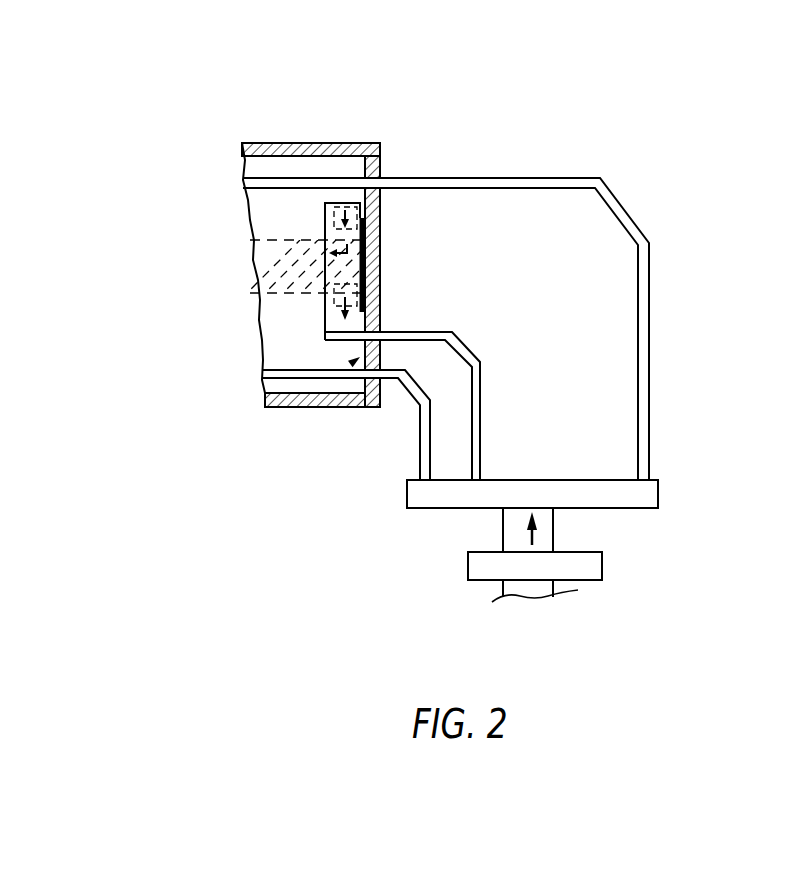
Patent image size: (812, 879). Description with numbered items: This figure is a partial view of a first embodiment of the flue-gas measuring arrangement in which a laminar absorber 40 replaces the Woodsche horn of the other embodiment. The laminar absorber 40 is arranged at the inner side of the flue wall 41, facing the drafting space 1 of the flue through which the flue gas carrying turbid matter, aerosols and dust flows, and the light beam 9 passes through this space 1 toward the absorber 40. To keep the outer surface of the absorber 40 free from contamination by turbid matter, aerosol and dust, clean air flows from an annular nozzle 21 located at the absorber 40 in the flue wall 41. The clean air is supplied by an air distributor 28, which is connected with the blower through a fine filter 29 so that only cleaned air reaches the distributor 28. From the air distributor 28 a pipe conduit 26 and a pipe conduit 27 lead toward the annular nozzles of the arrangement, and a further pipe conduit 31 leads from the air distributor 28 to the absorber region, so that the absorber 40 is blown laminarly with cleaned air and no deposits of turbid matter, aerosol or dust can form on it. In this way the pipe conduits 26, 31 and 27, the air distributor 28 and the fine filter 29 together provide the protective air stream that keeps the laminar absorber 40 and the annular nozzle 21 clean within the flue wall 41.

The drafting space 1 is at (302, 344).
The light beam 9 is at (280, 258).
The annular nozzle 21 is at (328, 218).
The laminar absorber 40 is at (360, 242).
The flue wall 41 is at (360, 357).
The pipe conduit 26 is at (623, 215).
The further pipe conduit 31 is at (465, 348).
The pipe conduit 27 is at (412, 392).
The air distributor 28 is at (643, 495).
The fine filter 29 is at (577, 567).